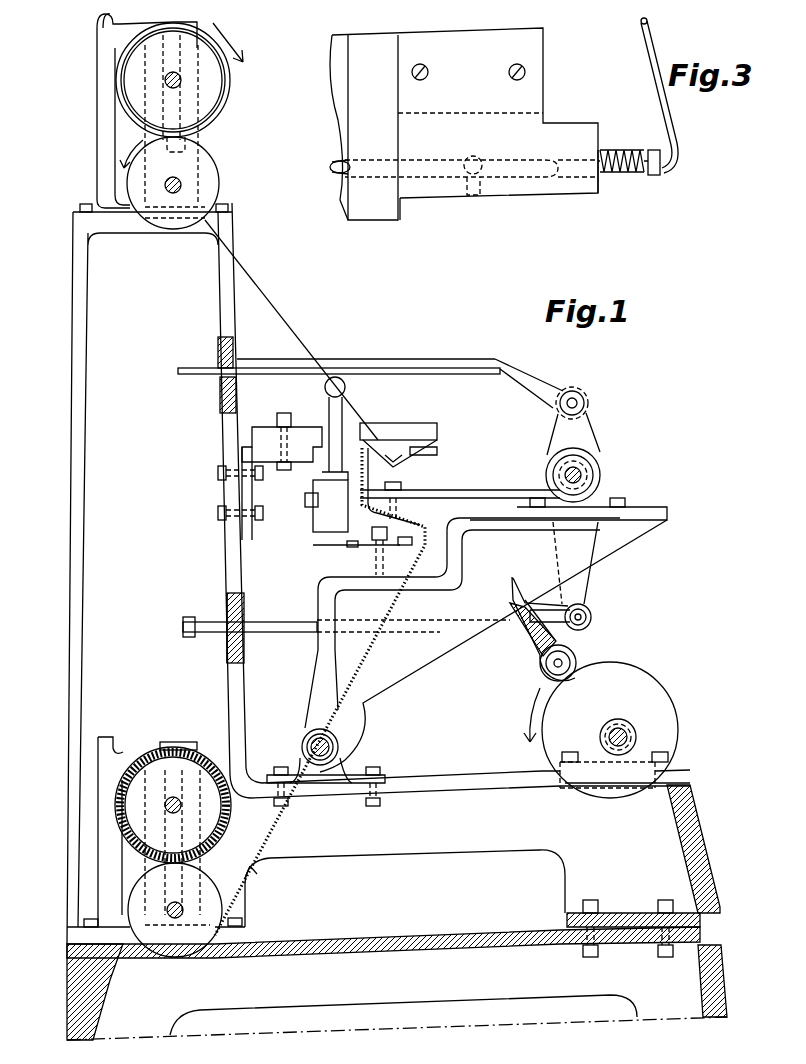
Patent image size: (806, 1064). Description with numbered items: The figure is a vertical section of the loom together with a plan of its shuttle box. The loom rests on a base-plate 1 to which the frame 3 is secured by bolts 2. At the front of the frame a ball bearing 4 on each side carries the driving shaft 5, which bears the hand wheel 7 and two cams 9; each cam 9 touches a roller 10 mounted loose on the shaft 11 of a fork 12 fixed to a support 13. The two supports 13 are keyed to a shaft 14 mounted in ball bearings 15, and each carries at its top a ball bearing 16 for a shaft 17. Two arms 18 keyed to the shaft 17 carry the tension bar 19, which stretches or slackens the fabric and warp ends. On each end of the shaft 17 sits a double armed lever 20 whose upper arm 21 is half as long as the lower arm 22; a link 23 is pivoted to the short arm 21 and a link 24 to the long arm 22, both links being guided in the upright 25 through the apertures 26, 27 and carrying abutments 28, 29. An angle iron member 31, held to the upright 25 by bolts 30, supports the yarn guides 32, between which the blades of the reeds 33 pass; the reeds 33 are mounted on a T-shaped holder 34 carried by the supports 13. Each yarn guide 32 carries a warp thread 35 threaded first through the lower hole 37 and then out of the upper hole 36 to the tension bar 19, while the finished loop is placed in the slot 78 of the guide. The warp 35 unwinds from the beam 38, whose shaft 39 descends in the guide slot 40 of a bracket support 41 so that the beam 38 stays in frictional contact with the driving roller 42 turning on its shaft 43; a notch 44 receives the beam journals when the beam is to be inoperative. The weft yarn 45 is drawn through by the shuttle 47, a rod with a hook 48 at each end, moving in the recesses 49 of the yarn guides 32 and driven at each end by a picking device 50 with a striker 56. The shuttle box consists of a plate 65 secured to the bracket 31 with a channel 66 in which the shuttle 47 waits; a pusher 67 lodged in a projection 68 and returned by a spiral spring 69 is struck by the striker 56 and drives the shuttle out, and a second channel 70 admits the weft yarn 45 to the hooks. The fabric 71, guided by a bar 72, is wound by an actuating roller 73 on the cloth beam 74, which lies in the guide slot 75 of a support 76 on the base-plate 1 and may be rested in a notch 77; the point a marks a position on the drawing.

In FIG. 1, the base-plate 1 is at (200, 997).
In FIG. 1, the bolts 2 is at (658, 903).
In FIG. 1, the frame 3 is at (687, 827).
In FIG. 1, the ball bearing 4 is at (640, 742).
In FIG. 1, the driving shaft 5 is at (625, 732).
In FIG. 1, the hand wheel 7 is at (367, 810).
In FIG. 1, the cam 9 is at (600, 680).
In FIG. 1, the roller 10 is at (575, 655).
In FIG. 1, the shaft of fork 11 is at (553, 667).
In FIG. 1, the fork 12 is at (548, 640).
In FIG. 1, the support 13 is at (402, 655).
In FIG. 1, the shaft 14 is at (305, 738).
In FIG. 1, the ball bearing 15 is at (348, 760).
In FIG. 1, the ball bearing 16 is at (590, 485).
In FIG. 1, the shaft 17 is at (520, 490).
In FIG. 1, the arm 18 is at (478, 492).
In FIG. 1, the tension bar 19 is at (300, 510).
In FIG. 1, the double armed lever 20 is at (585, 452).
In FIG. 1, the upper arm 21 is at (583, 422).
In FIG. 1, the lower arm 22 is at (588, 590).
In FIG. 1, the link 23 is at (475, 360).
In FIG. 1, the link 24 is at (190, 635).
In FIG. 1, the upright 25 is at (226, 430).
In FIG. 1, the aperture 26 is at (217, 368).
In FIG. 1, the aperture 27 is at (227, 636).
In FIG. 1, the abutment 28 is at (235, 363).
In FIG. 1, the abutment 29 is at (183, 625).
In FIG. 1, the bolts 30 is at (217, 515).
In FIG. 1, the angle iron member 31 is at (252, 497).
In FIG. 3, the angle iron member 31 is at (372, 200).
In FIG. 1, the yarn guide 32 is at (377, 437).
In FIG. 1, the reed 33 is at (342, 378).
In FIG. 1, the T-shaped holder 34 is at (318, 590).
In FIG. 1, the warp thread 35 is at (240, 367).
In FIG. 1, the upper hole 36 is at (433, 443).
In FIG. 1, the lower hole 37 is at (300, 510).
In FIG. 1, the beam 38 is at (230, 80).
In FIG. 1, the shaft 39 is at (180, 85).
In FIG. 1, the guide slot 40 is at (205, 40).
In FIG. 1, the bracket support 41 is at (107, 140).
In FIG. 1, the driving roller 42 is at (193, 172).
In FIG. 1, the shaft 43 is at (185, 187).
In FIG. 1, the notch 44 is at (100, 22).
In FIG. 3, the weft yarn 45 is at (477, 200).
In FIG. 1, the shuttle 47 is at (405, 447).
In FIG. 3, the shuttle 47 is at (343, 178).
In FIG. 3, the hook 48 is at (338, 175).
In FIG. 1, the recess 49 is at (395, 455).
In FIG. 3, the picking device 50 is at (640, 22).
In FIG. 3, the striker 56 is at (658, 172).
In FIG. 3, the plate 65 is at (515, 90).
In FIG. 3, the channel 66 is at (428, 178).
In FIG. 3, the pusher 67 is at (632, 178).
In FIG. 3, the projection 68 is at (543, 190).
In FIG. 3, the spiral spring 69 is at (610, 212).
In FIG. 3, the second channel 70 is at (475, 197).
In FIG. 1, the fabric 71 is at (280, 590).
In FIG. 1, the bar 72 is at (385, 550).
In FIG. 1, the actuating roller 73 is at (210, 900).
In FIG. 1, the cloth beam 74 is at (155, 770).
In FIG. 1, the guide slot 75 is at (170, 747).
In FIG. 1, the support 76 is at (113, 763).
In FIG. 1, the notch 77 is at (115, 742).
In FIG. 1, the slot 78 is at (420, 450).
In FIG. 1, the point a is at (650, 786).